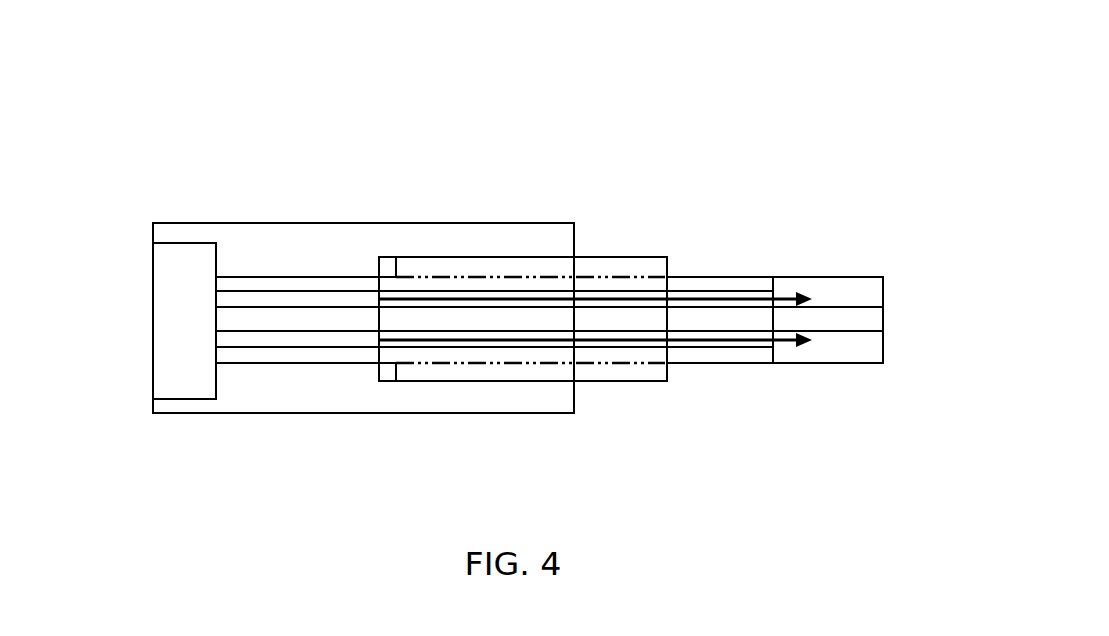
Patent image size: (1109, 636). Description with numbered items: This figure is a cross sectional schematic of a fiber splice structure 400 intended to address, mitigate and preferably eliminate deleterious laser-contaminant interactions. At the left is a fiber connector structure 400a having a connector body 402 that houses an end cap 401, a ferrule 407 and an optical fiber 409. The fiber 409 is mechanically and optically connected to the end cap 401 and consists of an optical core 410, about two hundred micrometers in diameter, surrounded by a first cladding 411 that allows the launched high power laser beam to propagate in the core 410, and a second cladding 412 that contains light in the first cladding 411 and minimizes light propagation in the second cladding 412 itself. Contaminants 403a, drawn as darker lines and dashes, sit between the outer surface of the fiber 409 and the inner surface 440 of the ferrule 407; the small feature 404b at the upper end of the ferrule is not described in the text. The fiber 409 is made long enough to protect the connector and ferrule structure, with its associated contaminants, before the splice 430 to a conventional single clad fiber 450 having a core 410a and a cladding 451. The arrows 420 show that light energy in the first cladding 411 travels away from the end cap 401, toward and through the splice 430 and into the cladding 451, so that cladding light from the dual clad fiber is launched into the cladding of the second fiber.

The fiber splice structure 400 is at (153, 185).
The fiber connector structure 400a is at (435, 123).
The end cap 401 is at (153, 278).
The connector body 402 is at (240, 405).
The contaminants 403a is at (394, 367).
The upper fiber stub 404b is at (392, 270).
The ferrule 407 is at (512, 262).
The optical fiber 409 is at (727, 277).
The optical core 410 is at (753, 322).
The core 410a is at (877, 323).
The first cladding 411 is at (700, 290).
The second cladding 412 is at (683, 355).
The arrows 420 is at (765, 292).
The splice 430 is at (780, 363).
The inner surface of the ferrule 440 is at (405, 364).
The single clad fiber 450 is at (850, 277).
The cladding 451 is at (877, 353).